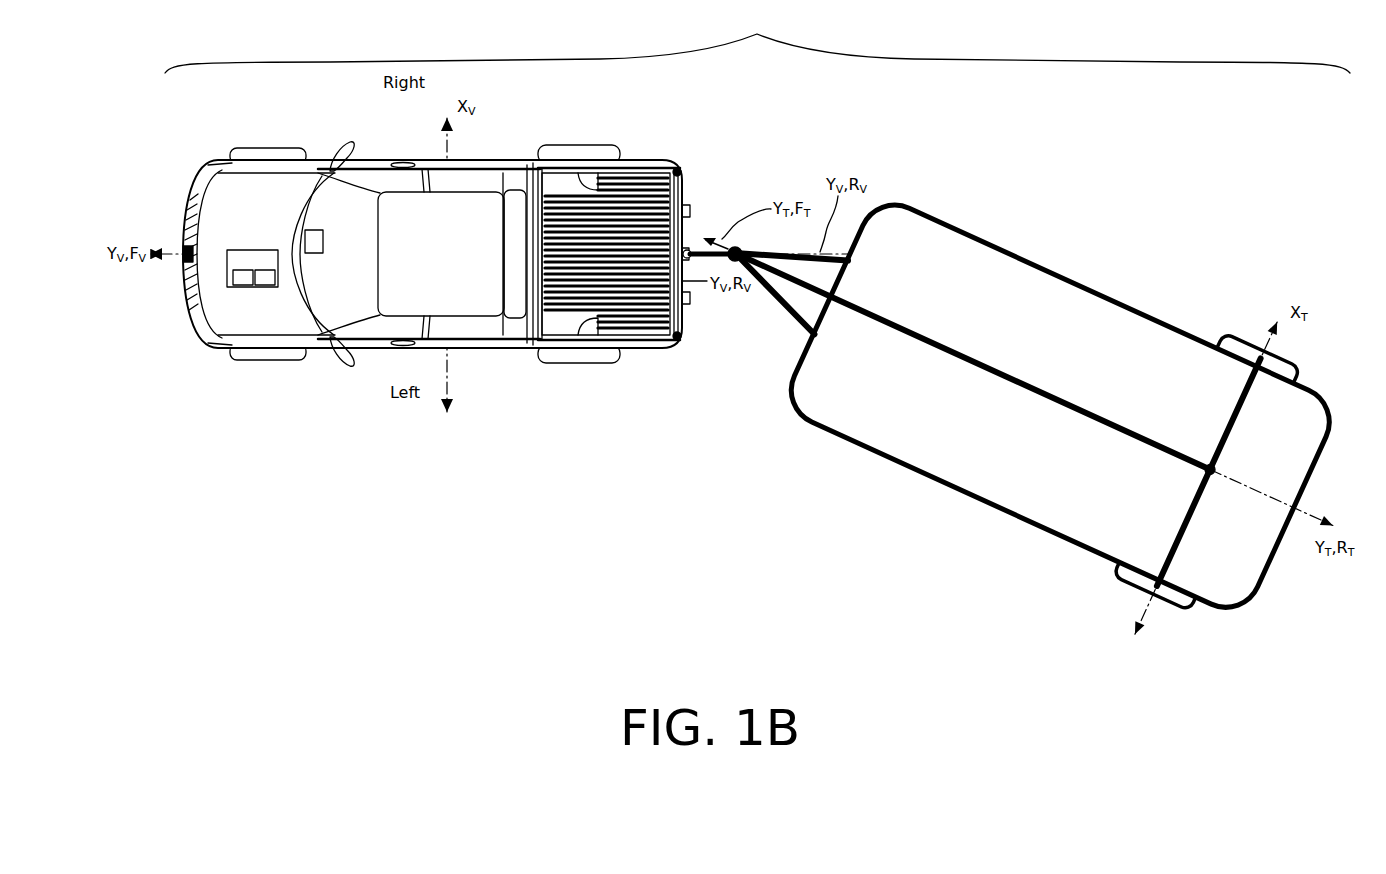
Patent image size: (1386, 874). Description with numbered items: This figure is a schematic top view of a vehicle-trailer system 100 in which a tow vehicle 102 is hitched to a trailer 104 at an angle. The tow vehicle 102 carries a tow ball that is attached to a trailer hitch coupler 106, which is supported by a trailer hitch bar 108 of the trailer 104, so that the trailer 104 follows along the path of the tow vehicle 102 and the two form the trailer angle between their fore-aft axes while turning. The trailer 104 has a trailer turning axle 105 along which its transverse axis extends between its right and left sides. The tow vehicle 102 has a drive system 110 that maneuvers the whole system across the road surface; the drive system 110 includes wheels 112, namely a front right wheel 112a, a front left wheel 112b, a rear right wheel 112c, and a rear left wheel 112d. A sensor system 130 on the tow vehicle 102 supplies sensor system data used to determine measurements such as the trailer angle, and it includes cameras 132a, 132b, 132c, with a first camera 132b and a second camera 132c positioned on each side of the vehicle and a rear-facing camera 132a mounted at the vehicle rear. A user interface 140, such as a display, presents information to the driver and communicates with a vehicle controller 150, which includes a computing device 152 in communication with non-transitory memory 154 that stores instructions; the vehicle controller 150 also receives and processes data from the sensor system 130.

The vehicle-trailer system 100 is at (757, 41).
The tow vehicle 102 is at (723, 367).
The trailer 104 is at (1023, 398).
The trailer turning axle 105 is at (1209, 471).
The trailer hitch coupler 106 is at (742, 251).
The trailer hitch bar 108 is at (972, 362).
The drive system 110 is at (765, 367).
The wheels 112 is at (765, 367).
The front right wheel 112a is at (300, 147).
The front left wheel 112b is at (300, 361).
The rear right wheel 112c is at (578, 146).
The rear left wheel 112d is at (582, 362).
The sensor system 130 is at (451, 265).
The camera 132a is at (719, 217).
The first camera 132b is at (346, 146).
The second camera 132c is at (346, 368).
The user interface 140 is at (323, 242).
The vehicle controller 150 is at (240, 268).
The computing device 152 is at (244, 286).
The non-transitory memory 154 is at (265, 286).